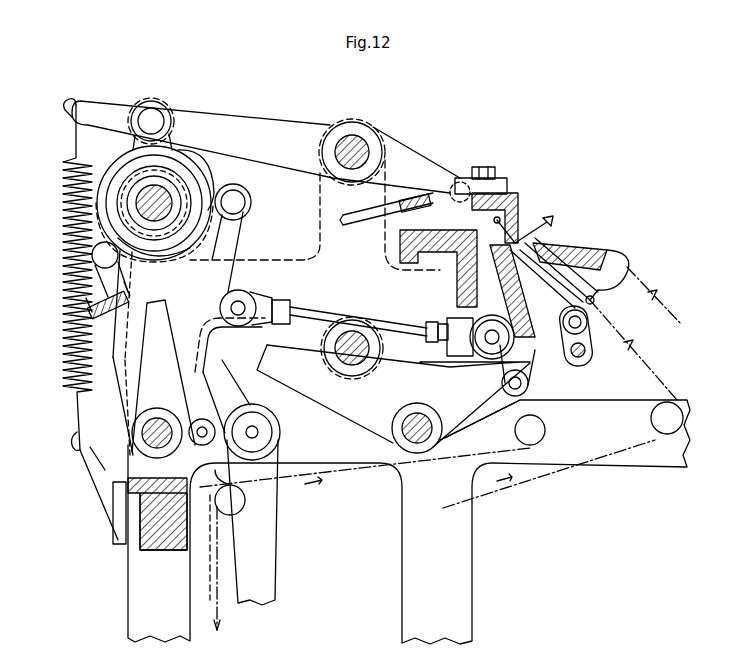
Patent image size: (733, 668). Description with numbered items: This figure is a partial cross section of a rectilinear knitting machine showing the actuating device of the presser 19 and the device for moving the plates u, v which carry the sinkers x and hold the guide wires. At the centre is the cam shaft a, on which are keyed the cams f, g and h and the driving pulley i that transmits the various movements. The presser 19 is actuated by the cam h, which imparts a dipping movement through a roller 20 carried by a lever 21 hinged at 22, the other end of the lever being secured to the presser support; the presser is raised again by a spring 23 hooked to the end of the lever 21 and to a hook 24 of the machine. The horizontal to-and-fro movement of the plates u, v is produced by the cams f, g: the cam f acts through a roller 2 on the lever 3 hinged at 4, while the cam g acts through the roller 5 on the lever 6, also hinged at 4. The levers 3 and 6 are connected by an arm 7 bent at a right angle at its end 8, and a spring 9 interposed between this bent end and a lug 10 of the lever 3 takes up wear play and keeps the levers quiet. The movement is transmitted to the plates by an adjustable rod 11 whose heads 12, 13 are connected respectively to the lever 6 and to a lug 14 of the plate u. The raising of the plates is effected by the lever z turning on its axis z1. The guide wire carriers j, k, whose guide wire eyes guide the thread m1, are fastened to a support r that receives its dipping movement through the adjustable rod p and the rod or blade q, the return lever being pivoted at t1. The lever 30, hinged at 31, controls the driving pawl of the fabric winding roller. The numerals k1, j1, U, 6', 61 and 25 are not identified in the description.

The roller 20 is at (150, 108).
The cam h is at (190, 168).
The cam g is at (203, 153).
The lever 21 is at (245, 133).
The hinge of lever 21 22 is at (356, 140).
The presser 19 is at (473, 200).
The rod or blade q is at (507, 205).
The link k1 is at (540, 217).
The plate j1 is at (560, 230).
The guide wire carrier k is at (573, 237).
The guide wire carrier j is at (598, 248).
The direction line U is at (628, 267).
The spring 23 is at (68, 177).
The cam shaft a is at (139, 203).
The roller 2 is at (98, 243).
The roller 5 is at (240, 189).
The lever 6 is at (240, 252).
The adjustable rod p is at (368, 218).
The sinkers x is at (497, 237).
The support r is at (595, 300).
The spring 9 is at (88, 302).
The lug 10 is at (137, 300).
The cam f is at (173, 258).
The head of rod 11 12 is at (255, 296).
The pivot of lever t t1 is at (353, 340).
The adjustable rod 11 is at (390, 322).
The plate v is at (490, 273).
The thread m1 is at (656, 368).
The bent end of arm 7 8 is at (80, 312).
The arm 7 is at (150, 324).
The pivot roller 6' is at (241, 401).
The head of rod 11 13 is at (453, 343).
The lug 14 is at (537, 353).
The plate u is at (590, 353).
The lever 3 is at (120, 363).
The driving pulley i is at (397, 358).
The lever z is at (337, 407).
The hook 24 is at (98, 460).
The hinge 4 is at (113, 528).
The block 61 is at (198, 446).
The hinge of lever 30 31 is at (255, 440).
The frame 25 is at (409, 402).
The axis of lever z z1 is at (418, 443).
The lever 30 is at (262, 537).